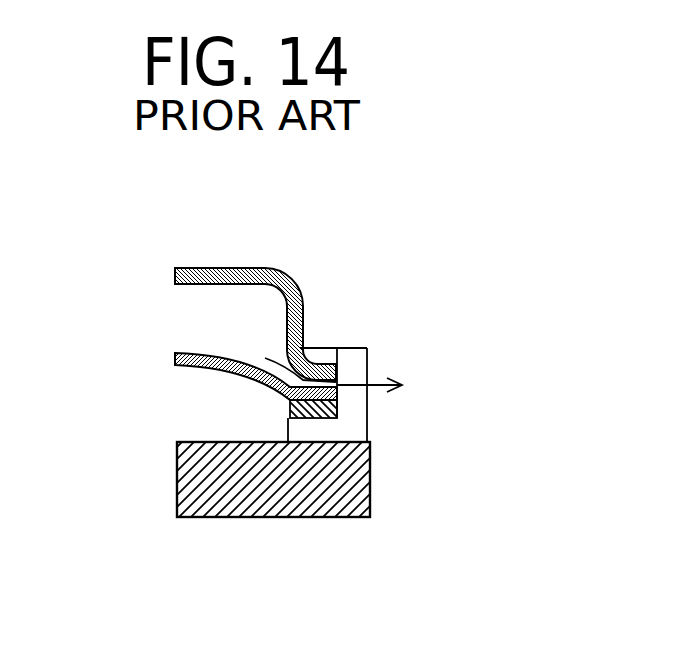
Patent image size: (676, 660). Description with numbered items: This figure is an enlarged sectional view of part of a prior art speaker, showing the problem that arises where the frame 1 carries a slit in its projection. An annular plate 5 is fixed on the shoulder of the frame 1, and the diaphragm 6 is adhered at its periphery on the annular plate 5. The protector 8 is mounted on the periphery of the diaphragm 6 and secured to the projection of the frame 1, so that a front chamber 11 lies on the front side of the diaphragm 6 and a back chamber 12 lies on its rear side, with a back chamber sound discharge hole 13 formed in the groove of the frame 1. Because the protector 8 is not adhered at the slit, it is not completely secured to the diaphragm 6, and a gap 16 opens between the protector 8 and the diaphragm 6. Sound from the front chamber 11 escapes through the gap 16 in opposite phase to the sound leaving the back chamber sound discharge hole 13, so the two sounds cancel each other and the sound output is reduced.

The frame 1 is at (265, 483).
The annular plate 5 is at (337, 408).
The diaphragm 6 is at (202, 353).
The protector 8 is at (221, 290).
The front chamber 11 is at (198, 322).
The back chamber 12 is at (208, 402).
The back chamber sound discharge hole 13 is at (330, 430).
The gap 16 is at (349, 378).